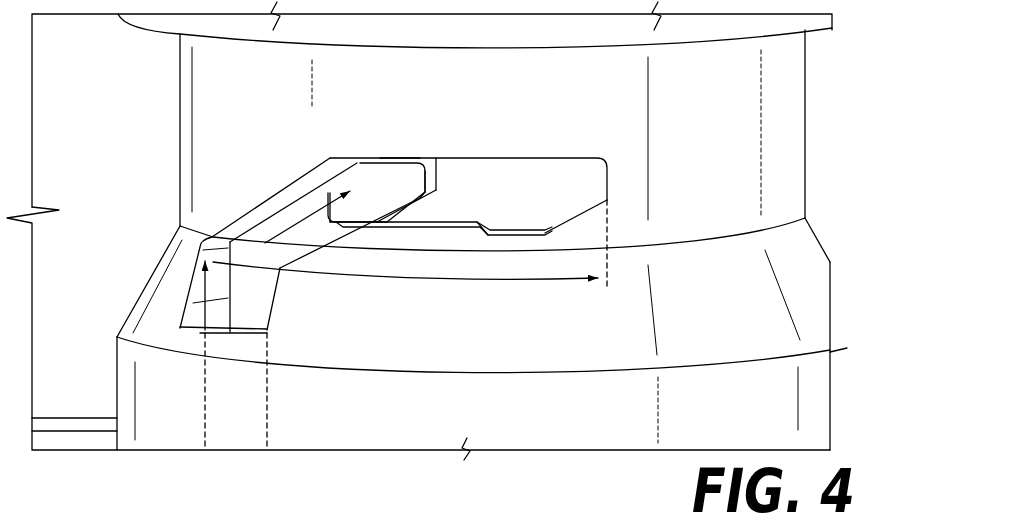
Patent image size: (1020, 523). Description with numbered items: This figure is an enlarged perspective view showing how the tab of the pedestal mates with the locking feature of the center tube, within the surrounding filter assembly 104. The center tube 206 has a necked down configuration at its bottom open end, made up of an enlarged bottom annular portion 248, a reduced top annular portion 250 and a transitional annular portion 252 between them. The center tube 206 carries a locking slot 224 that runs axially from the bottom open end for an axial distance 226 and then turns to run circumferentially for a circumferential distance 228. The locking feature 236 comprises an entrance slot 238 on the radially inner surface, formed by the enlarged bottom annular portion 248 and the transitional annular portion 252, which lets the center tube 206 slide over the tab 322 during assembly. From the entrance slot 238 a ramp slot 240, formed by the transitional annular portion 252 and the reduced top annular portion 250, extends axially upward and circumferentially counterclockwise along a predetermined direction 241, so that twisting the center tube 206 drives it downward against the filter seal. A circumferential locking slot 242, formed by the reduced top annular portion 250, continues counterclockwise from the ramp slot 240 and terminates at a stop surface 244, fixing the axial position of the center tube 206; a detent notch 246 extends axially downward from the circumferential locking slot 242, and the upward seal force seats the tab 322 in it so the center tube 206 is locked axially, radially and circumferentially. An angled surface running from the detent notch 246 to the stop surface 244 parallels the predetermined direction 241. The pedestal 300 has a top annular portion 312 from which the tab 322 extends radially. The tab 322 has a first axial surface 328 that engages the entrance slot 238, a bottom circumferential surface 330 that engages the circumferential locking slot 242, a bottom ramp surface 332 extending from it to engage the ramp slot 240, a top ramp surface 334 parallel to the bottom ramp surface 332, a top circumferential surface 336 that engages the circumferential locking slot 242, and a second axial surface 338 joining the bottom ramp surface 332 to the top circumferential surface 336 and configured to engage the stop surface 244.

The gas turbine engine casing 104 is at (106, 163).
The center tube 206 is at (783, 147).
The reduced top annular portion 250 is at (790, 210).
The transitional annular portion 252 is at (813, 308).
The enlarged bottom annular portion 248 is at (808, 433).
The pedestal 300 is at (607, 180).
The stop surface 244 is at (607, 193).
The locking slot 224 is at (500, 172).
The circumferential locking slot 242 is at (508, 178).
The top annular portion 312 is at (589, 178).
The tab 322 is at (454, 180).
The top ramp surface 334 is at (352, 160).
The top circumferential surface 336 is at (403, 157).
The second axial surface 338 is at (438, 168).
The locking feature 236 is at (273, 224).
The predetermined direction 241 is at (320, 214).
The ramp slot 240 is at (311, 202).
The first axial surface 328 is at (314, 215).
The bottom circumferential surface 330 is at (333, 222).
The bottom ramp surface 332 is at (420, 200).
The detent notch 246 is at (510, 231).
The circumferential distance 228 is at (557, 282).
The axial distance 226 is at (200, 288).
The entrance slot 238 is at (245, 324).